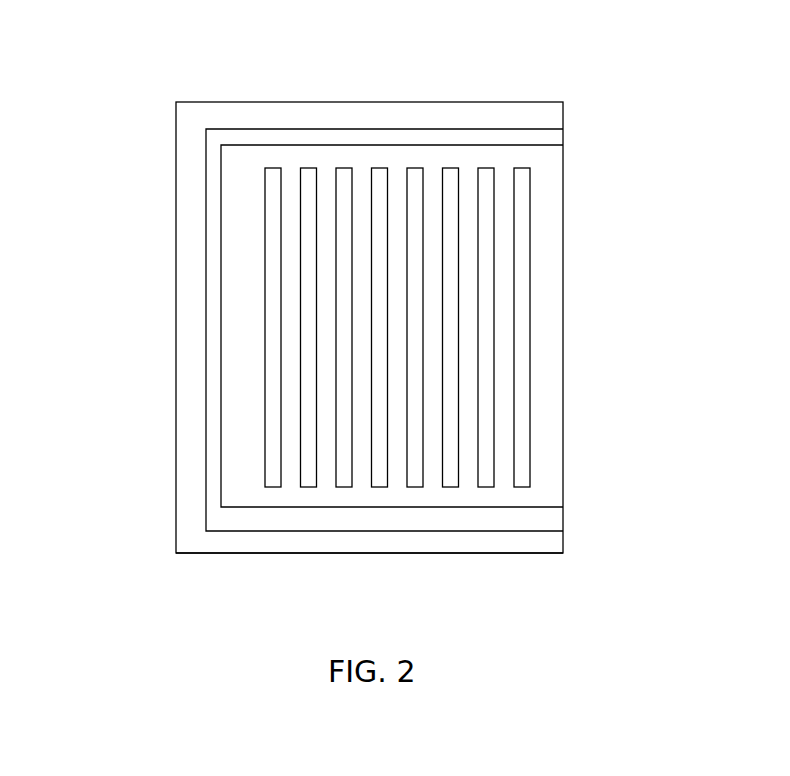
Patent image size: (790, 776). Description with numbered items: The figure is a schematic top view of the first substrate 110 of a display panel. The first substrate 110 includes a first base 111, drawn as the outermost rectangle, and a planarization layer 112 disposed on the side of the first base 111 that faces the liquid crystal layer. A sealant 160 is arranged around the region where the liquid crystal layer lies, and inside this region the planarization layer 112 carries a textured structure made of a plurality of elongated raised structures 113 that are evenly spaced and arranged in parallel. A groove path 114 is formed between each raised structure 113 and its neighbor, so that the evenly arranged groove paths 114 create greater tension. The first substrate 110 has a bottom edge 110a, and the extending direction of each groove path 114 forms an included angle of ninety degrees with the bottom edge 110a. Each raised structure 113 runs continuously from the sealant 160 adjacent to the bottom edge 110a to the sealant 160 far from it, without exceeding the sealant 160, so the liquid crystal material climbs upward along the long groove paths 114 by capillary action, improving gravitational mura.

The first substrate 110 is at (397, 82).
The bottom edge 110a is at (500, 553).
The first base 111 is at (190, 255).
The sealant 160 is at (550, 138).
The planarization layer 112 is at (547, 260).
The raised structure 113 is at (525, 313).
The groove path 114 is at (508, 392).